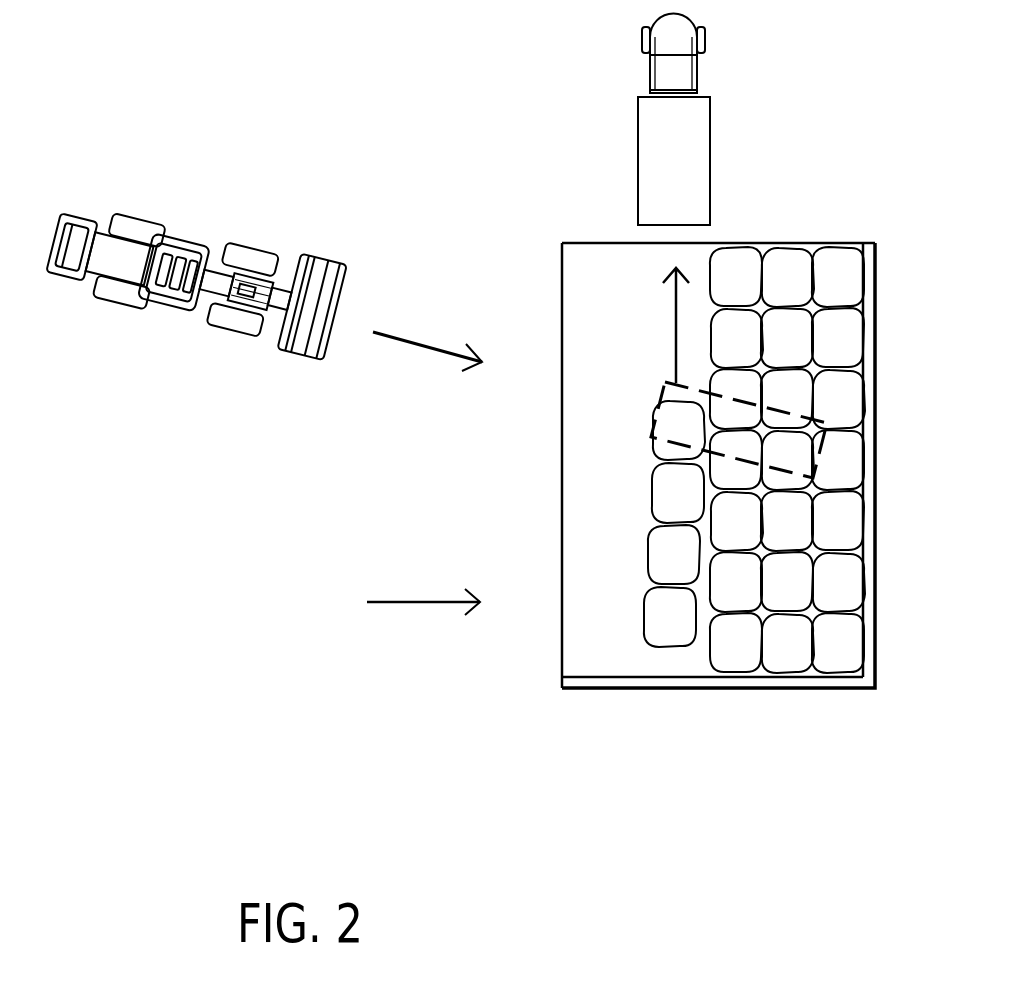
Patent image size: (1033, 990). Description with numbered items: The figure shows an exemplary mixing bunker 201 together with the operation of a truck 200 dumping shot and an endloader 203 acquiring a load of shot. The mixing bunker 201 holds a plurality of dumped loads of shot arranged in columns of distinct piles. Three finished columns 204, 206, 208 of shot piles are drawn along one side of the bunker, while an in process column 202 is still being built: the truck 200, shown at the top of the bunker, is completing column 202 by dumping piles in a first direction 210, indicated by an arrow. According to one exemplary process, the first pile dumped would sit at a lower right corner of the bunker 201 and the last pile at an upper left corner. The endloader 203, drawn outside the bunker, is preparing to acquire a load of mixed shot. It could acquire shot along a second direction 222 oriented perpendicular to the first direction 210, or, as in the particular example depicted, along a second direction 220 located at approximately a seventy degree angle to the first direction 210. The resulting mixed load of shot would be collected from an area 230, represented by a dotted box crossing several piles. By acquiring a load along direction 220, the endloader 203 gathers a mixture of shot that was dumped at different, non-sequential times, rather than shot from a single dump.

The truck 200 is at (636, 163).
The mixing bunker 201 is at (648, 692).
The in process column 202 is at (662, 498).
The endloader 203 is at (192, 238).
The finished column 204 is at (732, 250).
The finished column 206 is at (797, 247).
The finished column 208 is at (820, 250).
The first direction 210 is at (665, 310).
The second direction 220 is at (420, 362).
The second direction 222 is at (425, 615).
The area 230 is at (655, 403).